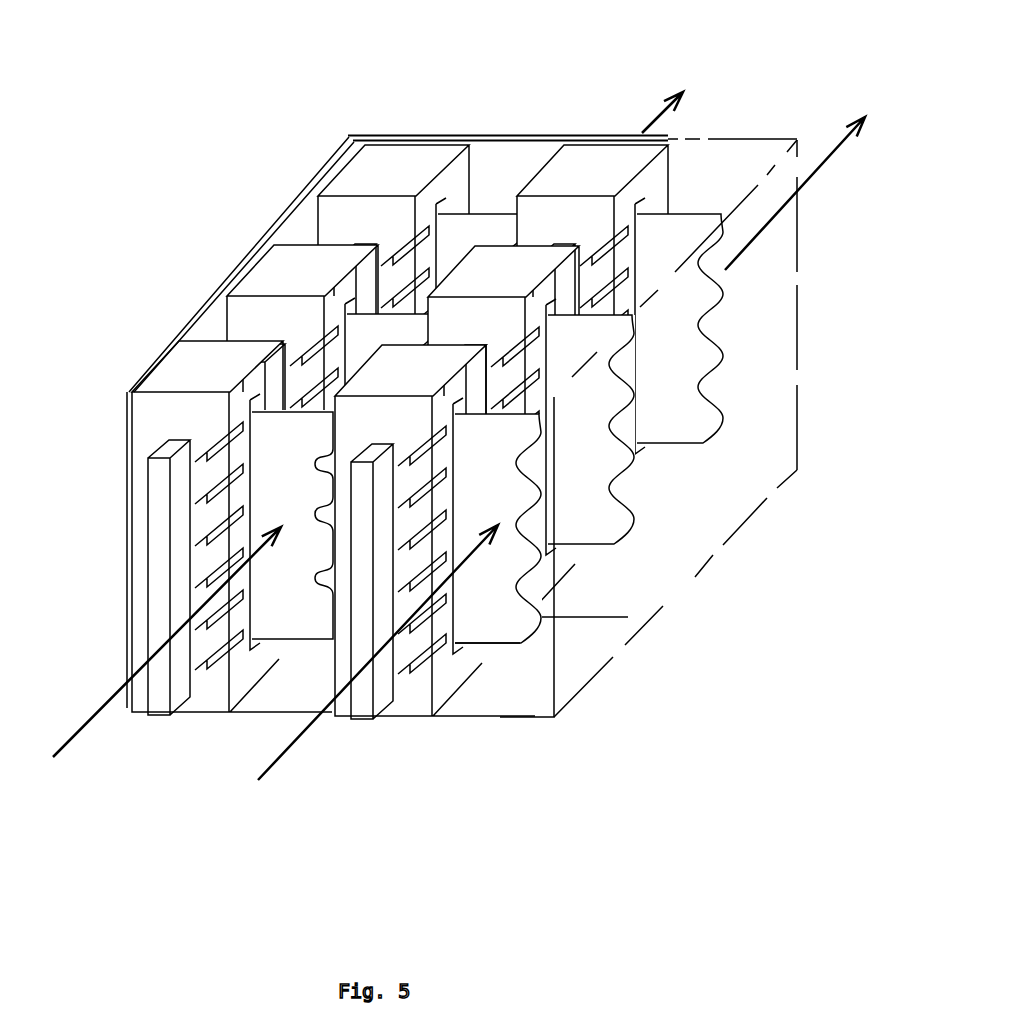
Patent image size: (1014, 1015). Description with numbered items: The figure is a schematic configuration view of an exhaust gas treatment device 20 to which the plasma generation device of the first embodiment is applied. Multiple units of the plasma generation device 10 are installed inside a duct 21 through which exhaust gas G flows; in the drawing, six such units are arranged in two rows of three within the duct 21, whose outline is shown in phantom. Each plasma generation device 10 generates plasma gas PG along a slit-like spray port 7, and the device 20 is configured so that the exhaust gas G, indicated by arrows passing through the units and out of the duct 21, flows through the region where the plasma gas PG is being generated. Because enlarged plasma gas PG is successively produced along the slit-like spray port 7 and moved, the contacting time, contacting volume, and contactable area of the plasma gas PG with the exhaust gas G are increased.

The slit-like spray port 7 is at (457, 598).
The plasma generation device 10 is at (428, 443).
The exhaust gas treatment device 20 is at (471, 441).
The duct 21 is at (667, 605).
The exhaust gas G is at (89, 730).
The plasma gas PG is at (512, 641).